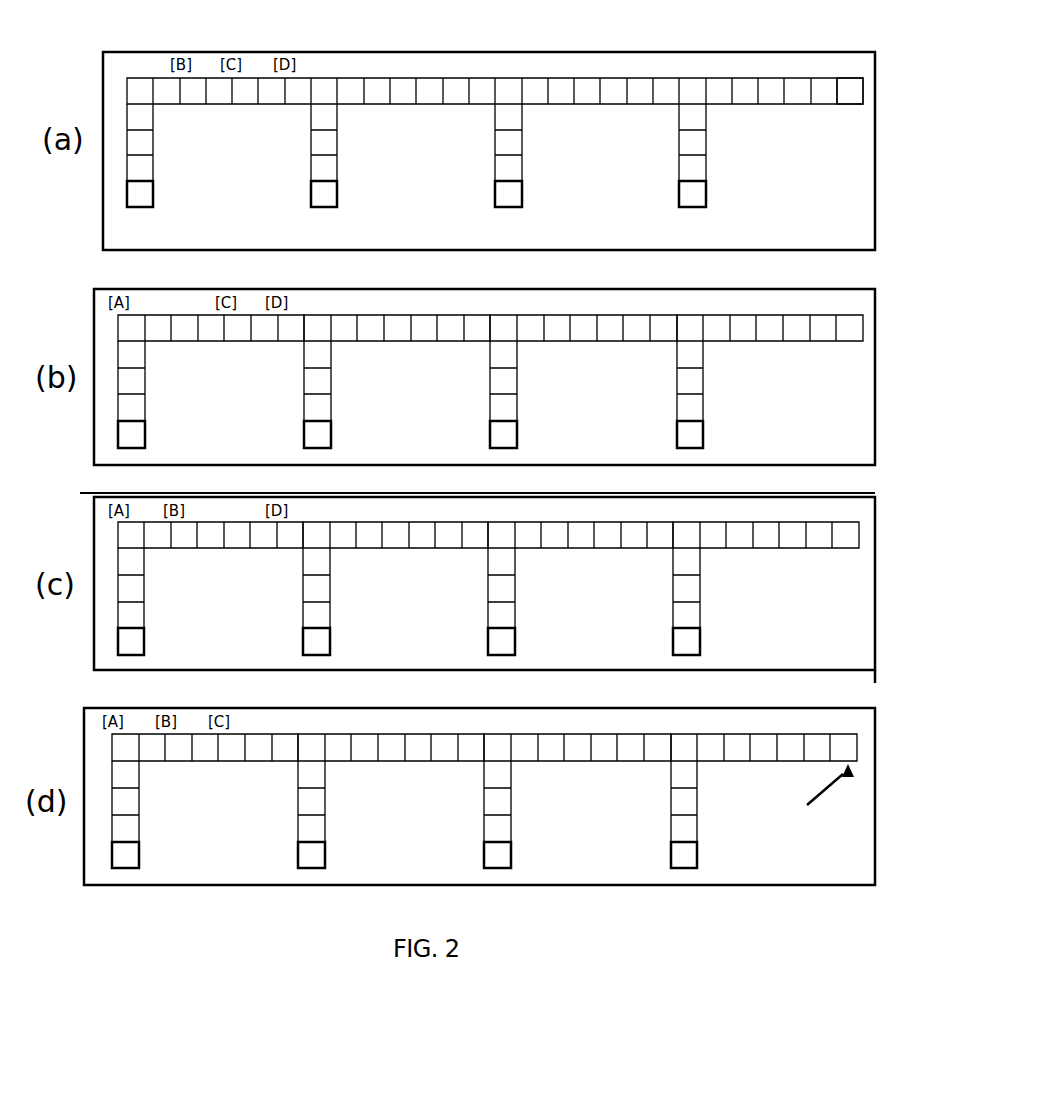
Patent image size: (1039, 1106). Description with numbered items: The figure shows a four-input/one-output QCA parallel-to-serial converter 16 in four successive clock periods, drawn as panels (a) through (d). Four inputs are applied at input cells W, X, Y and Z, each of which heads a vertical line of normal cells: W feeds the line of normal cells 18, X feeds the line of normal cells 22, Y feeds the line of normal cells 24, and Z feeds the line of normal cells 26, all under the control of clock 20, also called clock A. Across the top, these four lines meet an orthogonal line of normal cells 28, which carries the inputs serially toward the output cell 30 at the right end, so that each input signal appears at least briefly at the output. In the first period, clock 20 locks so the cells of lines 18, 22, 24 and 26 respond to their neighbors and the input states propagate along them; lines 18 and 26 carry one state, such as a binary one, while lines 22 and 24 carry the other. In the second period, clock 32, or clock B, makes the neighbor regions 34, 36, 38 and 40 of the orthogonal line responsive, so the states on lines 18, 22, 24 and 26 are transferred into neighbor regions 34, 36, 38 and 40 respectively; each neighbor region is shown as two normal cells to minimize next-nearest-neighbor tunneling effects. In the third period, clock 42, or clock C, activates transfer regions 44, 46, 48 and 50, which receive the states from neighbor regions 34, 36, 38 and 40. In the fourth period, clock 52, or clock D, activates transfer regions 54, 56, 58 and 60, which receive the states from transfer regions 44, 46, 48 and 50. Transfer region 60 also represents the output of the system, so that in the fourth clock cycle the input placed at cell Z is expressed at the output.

The parallel-to-serial converter 16 is at (568, 48).
The line of normal cells 18 is at (127, 178).
The clock 20 is at (145, 62).
The line of normal cells 22 is at (313, 157).
The line of normal cells 24 is at (495, 168).
The line of normal cells 26 is at (680, 168).
The orthogonal line of normal cells 28 is at (775, 105).
The output cell 30 is at (858, 82).
The clock 32 is at (172, 292).
The neighbor region 34 is at (172, 355).
The neighbor region 36 is at (350, 360).
The neighbor region 38 is at (540, 360).
The neighbor region 40 is at (730, 368).
The clock 42 is at (228, 503).
The transfer region 44 is at (228, 570).
The transfer region 46 is at (407, 573).
The transfer region 48 is at (598, 573).
The transfer region 50 is at (785, 580).
The clock 52 is at (290, 713).
The transfer region 54 is at (285, 783).
The transfer region 56 is at (467, 785).
The transfer region 58 is at (660, 783).
The transfer region 60 is at (848, 775).